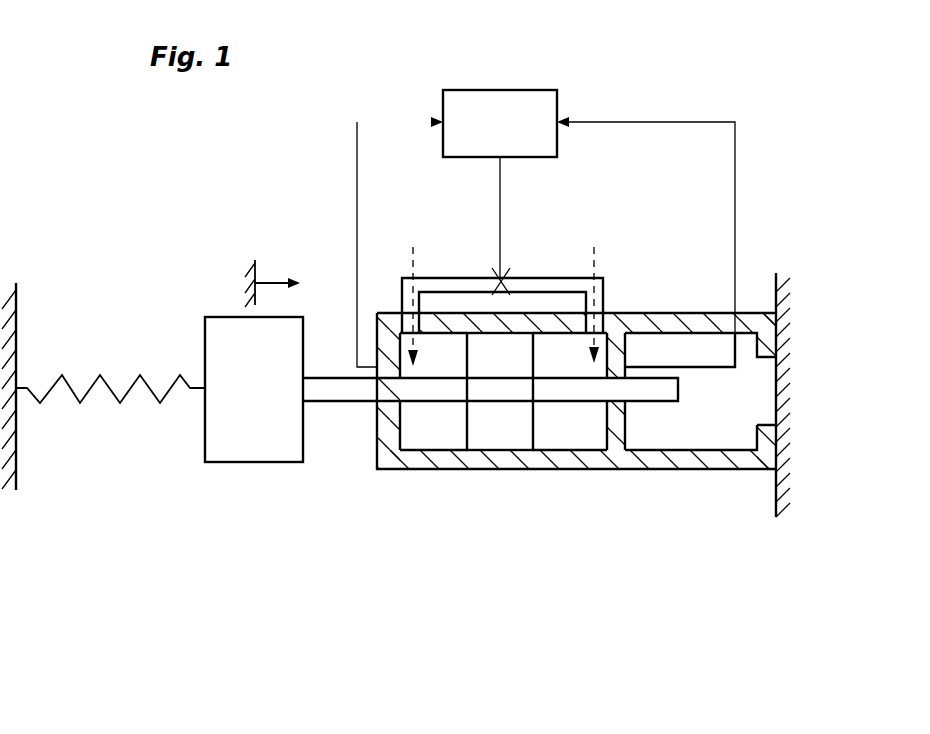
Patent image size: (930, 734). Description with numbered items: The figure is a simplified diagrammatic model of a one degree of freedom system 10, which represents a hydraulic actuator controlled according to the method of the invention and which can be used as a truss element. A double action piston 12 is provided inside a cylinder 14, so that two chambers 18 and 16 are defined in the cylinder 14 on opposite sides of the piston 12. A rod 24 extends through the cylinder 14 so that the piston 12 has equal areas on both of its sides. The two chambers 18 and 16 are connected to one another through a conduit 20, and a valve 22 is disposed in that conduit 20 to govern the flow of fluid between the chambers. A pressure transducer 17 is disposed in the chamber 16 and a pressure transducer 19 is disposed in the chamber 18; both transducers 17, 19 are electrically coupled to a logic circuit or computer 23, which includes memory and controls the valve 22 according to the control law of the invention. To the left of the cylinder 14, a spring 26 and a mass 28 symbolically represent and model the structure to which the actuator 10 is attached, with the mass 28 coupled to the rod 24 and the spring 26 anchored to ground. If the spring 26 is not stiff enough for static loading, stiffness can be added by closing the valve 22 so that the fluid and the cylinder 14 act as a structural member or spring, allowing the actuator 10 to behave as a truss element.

The one degree of freedom system 10 is at (797, 535).
The double action piston 12 is at (497, 443).
The cylinder 14 is at (563, 460).
The chamber 16 is at (562, 360).
The pressure transducer 17 is at (625, 334).
The chamber 18 is at (420, 443).
The pressure transducer 19 is at (410, 362).
The conduit 20 is at (542, 278).
The valve 22 is at (497, 280).
The logic circuit or computer 23 is at (557, 90).
The rod 24 is at (633, 387).
The spring 26 is at (140, 378).
The mass 28 is at (237, 448).